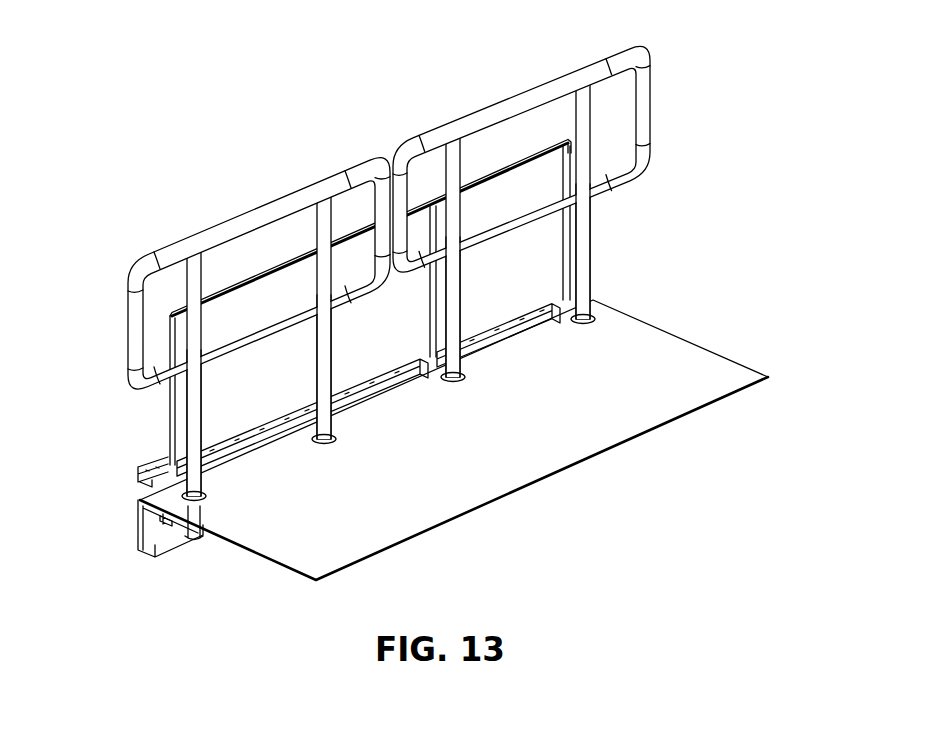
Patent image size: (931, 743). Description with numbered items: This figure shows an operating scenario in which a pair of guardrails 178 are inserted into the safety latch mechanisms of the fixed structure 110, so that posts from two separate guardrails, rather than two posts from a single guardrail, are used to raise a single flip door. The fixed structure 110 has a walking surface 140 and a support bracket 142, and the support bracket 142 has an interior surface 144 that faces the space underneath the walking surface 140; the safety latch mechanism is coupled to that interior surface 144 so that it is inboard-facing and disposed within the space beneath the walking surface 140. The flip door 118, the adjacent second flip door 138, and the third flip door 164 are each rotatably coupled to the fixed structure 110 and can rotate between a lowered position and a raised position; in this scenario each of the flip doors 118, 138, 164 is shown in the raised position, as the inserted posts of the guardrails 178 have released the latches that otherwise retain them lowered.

The fixed structure 110 is at (438, 313).
The flip door 118 is at (356, 254).
The second flip door 138 is at (490, 197).
The walking surface 140 is at (558, 457).
The support bracket 142 is at (148, 548).
The interior surface 144 is at (163, 534).
The third flip door 164 is at (244, 308).
The guardrails 178 is at (255, 206).